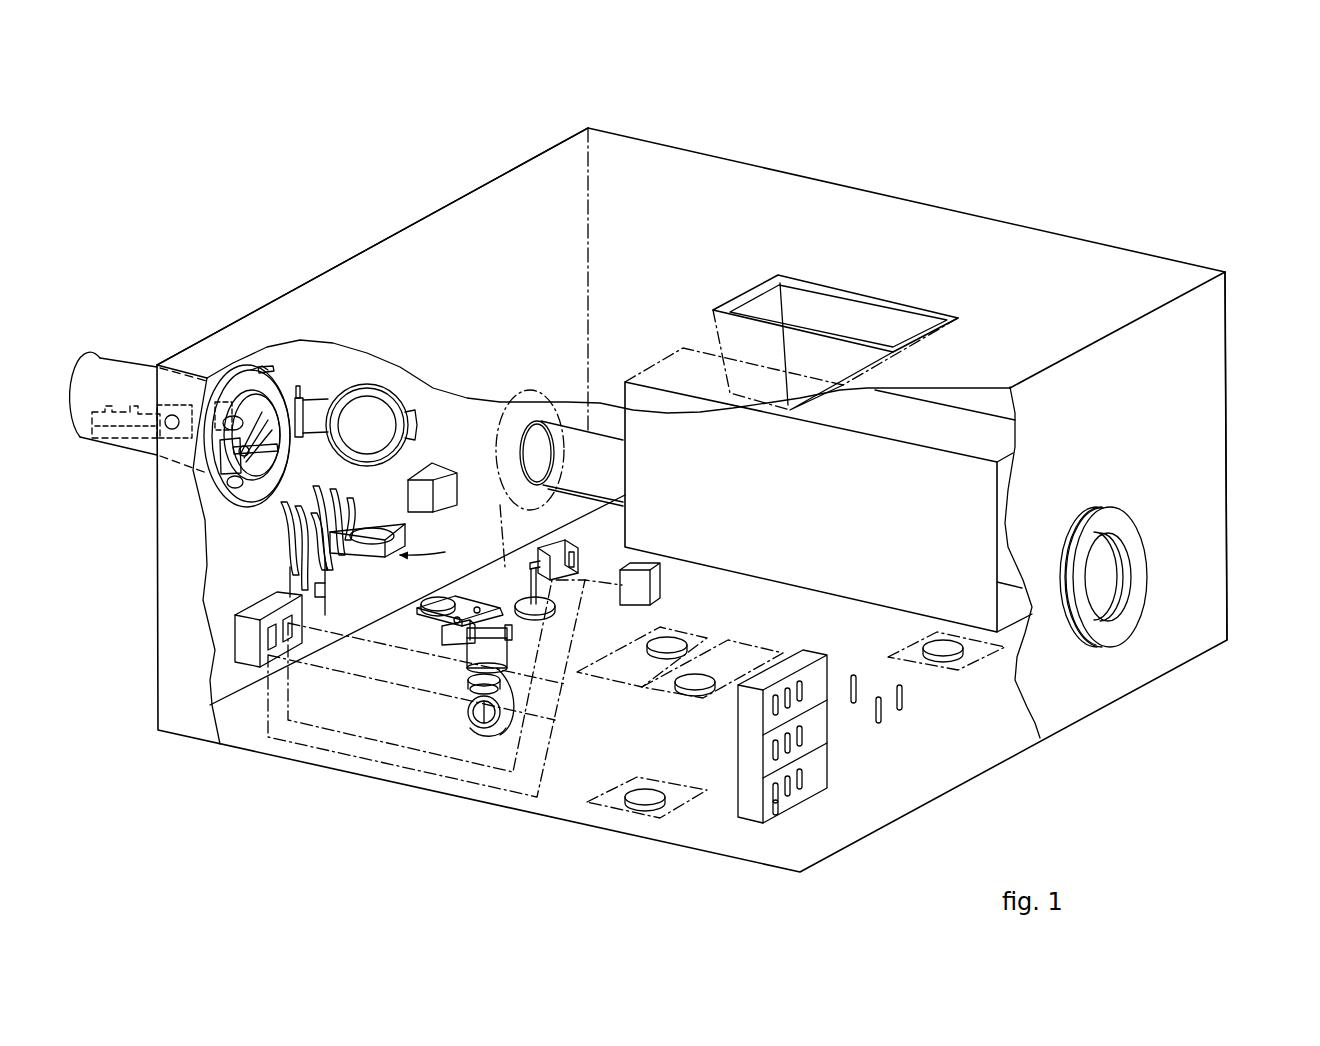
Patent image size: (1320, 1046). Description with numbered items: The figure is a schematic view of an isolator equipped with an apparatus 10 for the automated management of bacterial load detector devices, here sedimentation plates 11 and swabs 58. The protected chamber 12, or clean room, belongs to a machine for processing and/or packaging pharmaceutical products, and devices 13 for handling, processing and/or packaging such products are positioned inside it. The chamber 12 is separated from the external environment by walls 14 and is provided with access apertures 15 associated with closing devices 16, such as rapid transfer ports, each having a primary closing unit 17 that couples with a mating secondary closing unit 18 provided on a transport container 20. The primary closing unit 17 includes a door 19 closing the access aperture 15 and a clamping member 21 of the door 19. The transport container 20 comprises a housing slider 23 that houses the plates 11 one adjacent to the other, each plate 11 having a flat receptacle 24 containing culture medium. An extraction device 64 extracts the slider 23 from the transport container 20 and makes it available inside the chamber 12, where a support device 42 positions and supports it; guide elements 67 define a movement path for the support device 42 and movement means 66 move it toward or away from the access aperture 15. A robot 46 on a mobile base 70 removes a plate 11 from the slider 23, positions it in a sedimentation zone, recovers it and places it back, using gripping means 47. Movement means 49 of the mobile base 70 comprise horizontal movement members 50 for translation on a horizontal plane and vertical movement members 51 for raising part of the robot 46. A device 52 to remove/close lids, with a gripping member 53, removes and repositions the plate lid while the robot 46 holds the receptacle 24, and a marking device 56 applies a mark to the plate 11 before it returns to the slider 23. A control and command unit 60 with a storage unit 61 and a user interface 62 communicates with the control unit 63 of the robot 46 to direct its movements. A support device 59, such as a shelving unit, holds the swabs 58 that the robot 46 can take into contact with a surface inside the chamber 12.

The apparatus 10 is at (370, 657).
The sedimentation plates 11 is at (138, 427).
The protected chamber 12 is at (1133, 240).
The devices 13 is at (940, 420).
The walls 14 is at (322, 360).
The access apertures 15 is at (262, 502).
The closing devices 16 is at (279, 377).
The primary closing unit 17 is at (252, 382).
The secondary closing unit 18 is at (212, 472).
The door 19 is at (368, 425).
The transport container 20 is at (80, 362).
The clamping member 21 is at (253, 478).
The housing slider 23 is at (119, 406).
The receptacle 24 is at (705, 681).
The support device 42 is at (275, 576).
The robot 46 is at (497, 598).
The gripping means 47 is at (425, 628).
The movement means 49 is at (480, 738).
The horizontal movement members 50 is at (473, 705).
The vertical movement members 51 is at (478, 663).
The device to remove/close lids 52 is at (557, 546).
The gripping member 53 is at (538, 622).
The marking device 56 is at (667, 589).
The swabs 58 is at (800, 702).
The support device 59 is at (750, 805).
The control and command unit 60 is at (243, 655).
The storage unit 61 is at (268, 634).
The user interface 62 is at (288, 630).
The control unit 63 is at (510, 632).
The extraction device 64 is at (437, 463).
The movement means 66 is at (328, 588).
The guide elements 67 is at (329, 604).
The mobile base 70 is at (455, 687).